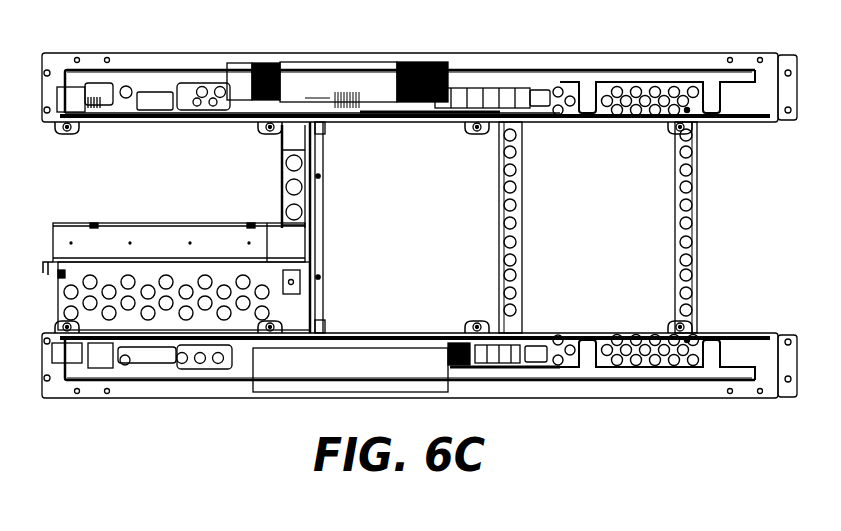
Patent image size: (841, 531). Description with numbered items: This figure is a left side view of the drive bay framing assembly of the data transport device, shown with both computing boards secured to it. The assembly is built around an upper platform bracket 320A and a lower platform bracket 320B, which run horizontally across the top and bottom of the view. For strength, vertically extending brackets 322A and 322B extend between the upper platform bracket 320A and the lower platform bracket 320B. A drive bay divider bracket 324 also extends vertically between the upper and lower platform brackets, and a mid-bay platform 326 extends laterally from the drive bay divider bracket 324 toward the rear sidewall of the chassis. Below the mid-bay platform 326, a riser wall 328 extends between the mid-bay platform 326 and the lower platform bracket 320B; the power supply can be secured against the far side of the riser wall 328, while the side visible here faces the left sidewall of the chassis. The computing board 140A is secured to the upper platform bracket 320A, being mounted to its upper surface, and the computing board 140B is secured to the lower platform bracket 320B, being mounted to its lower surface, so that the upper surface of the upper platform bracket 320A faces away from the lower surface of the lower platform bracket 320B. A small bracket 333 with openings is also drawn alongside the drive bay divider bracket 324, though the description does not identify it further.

The computing board 140A is at (419, 73).
The computing board 140B is at (419, 388).
The upper platform bracket 320A is at (645, 71).
The lower platform bracket 320B is at (650, 399).
The vertically extending bracket 322A is at (696, 204).
The vertically extending bracket 322B is at (499, 222).
The drive bay divider bracket 324 is at (318, 206).
The mid-bay platform 326 is at (210, 232).
The riser wall 328 is at (305, 311).
The mounting bracket with holes 333 is at (283, 183).